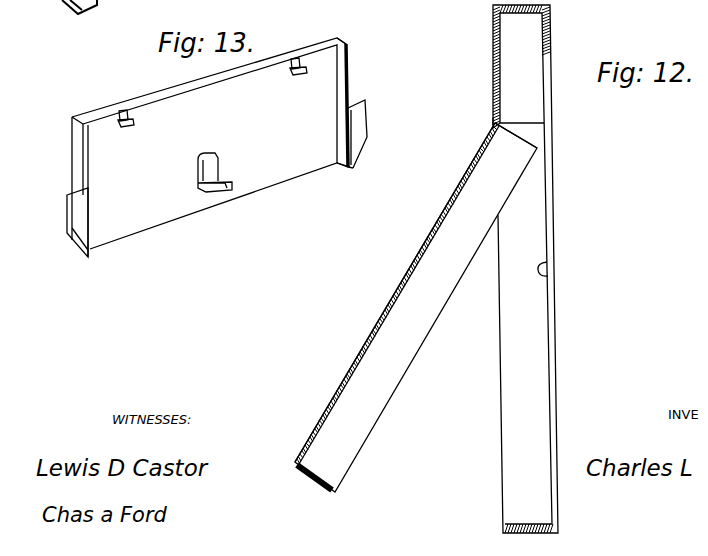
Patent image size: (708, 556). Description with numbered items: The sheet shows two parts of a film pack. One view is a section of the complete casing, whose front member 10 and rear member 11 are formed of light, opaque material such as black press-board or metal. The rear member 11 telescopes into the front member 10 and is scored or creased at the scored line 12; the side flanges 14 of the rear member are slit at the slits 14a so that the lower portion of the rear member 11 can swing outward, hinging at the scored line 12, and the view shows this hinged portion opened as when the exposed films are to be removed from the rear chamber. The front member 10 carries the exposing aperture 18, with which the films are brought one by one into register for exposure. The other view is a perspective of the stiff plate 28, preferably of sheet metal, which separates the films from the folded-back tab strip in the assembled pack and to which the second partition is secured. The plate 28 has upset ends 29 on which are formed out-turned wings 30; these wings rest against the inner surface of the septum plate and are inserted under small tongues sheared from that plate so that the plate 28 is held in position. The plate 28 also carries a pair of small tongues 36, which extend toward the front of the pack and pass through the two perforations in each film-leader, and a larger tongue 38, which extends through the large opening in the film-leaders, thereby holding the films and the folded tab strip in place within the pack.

In FIG. 12, the front member 10 is at (548, 32).
In FIG. 12, the rear member 11 is at (442, 212).
In FIG. 12, the scored line 12 is at (495, 122).
In FIG. 12, the side flanges 14 is at (390, 382).
In FIG. 12, the slits 14a is at (522, 138).
In FIG. 12, the exposing aperture 18 is at (552, 270).
In FIG. 13, the stiff plate 28 is at (144, 216).
In FIG. 13, the upset ends 29 is at (340, 78).
In FIG. 13, the out-turned wings 30 is at (70, 221).
In FIG. 13, the small tongues 36 is at (133, 123).
In FIG. 13, the tongue 38 is at (232, 182).